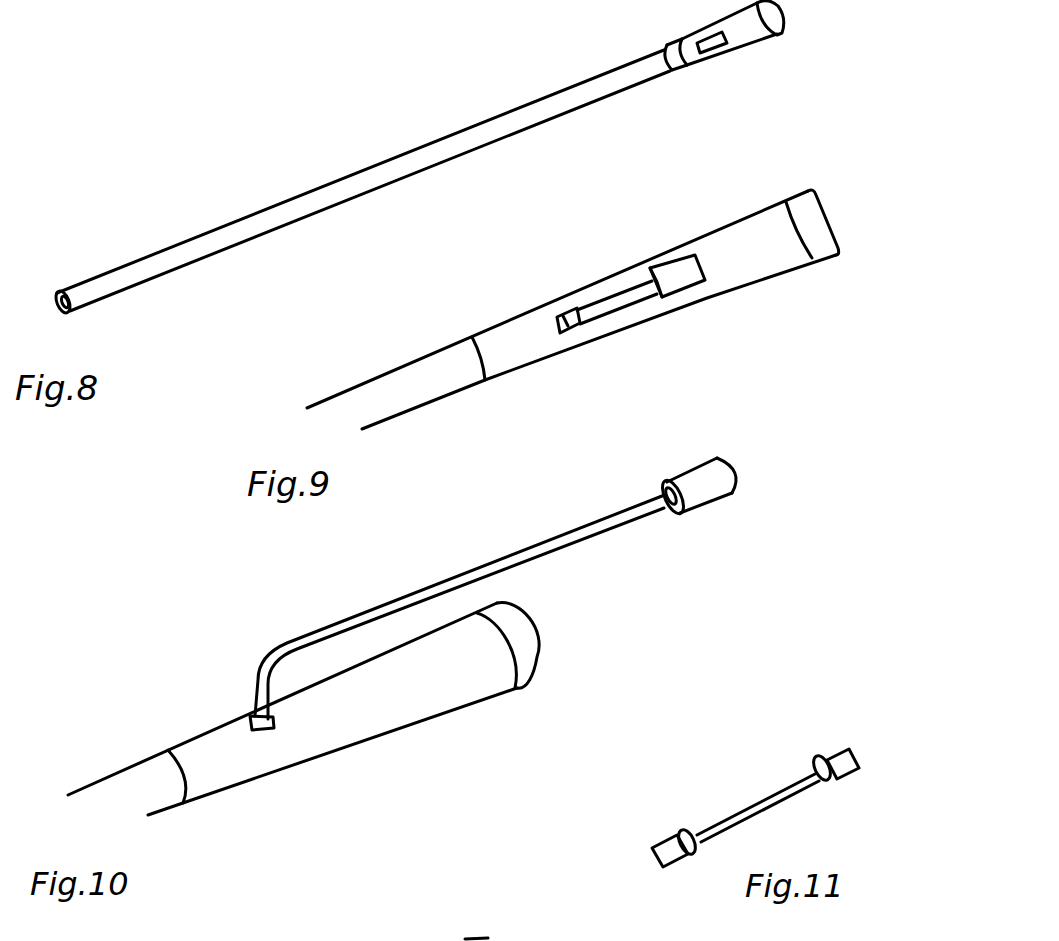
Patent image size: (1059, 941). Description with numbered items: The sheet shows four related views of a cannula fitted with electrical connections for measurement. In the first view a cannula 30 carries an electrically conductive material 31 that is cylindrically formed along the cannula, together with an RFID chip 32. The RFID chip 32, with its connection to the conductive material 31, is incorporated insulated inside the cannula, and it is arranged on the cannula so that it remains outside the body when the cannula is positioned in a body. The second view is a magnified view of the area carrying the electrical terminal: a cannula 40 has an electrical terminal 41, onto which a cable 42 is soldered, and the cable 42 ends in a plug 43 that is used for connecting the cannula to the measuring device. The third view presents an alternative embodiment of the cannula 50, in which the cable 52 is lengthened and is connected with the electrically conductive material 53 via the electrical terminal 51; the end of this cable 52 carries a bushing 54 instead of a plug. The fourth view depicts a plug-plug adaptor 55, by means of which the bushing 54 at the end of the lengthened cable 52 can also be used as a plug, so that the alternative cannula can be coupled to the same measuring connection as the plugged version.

In FIG. 8, the cannula 30 is at (394, 86).
In FIG. 8, the electrically conductive material 31 is at (258, 214).
In FIG. 8, the RFID chip 32 is at (722, 40).
In FIG. 9, the cannula 40 is at (517, 290).
In FIG. 9, the electrical terminal 41 is at (573, 333).
In FIG. 9, the cable 42 is at (623, 300).
In FIG. 9, the plug 43 is at (687, 270).
In FIG. 10, the cannula 50 is at (188, 715).
In FIG. 10, the electrical terminal 51 is at (267, 730).
In FIG. 10, the cable 52 is at (433, 585).
In FIG. 10, the electrically conductive material 53 is at (127, 800).
In FIG. 10, the bushing 54 is at (700, 500).
In FIG. 11, the adaptor 55 is at (747, 790).